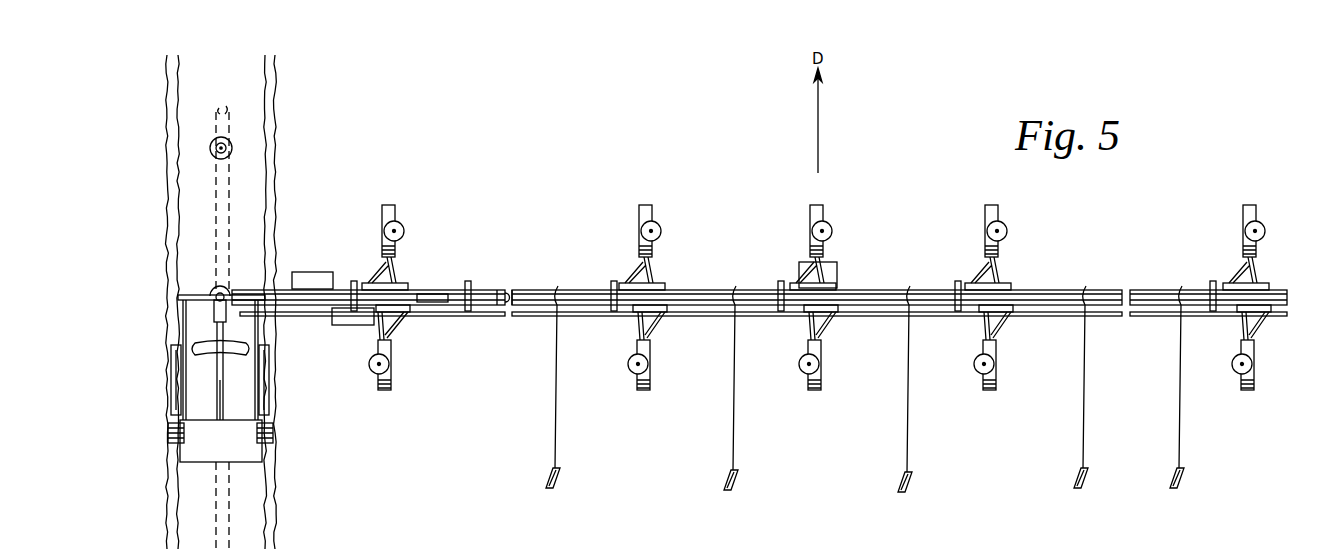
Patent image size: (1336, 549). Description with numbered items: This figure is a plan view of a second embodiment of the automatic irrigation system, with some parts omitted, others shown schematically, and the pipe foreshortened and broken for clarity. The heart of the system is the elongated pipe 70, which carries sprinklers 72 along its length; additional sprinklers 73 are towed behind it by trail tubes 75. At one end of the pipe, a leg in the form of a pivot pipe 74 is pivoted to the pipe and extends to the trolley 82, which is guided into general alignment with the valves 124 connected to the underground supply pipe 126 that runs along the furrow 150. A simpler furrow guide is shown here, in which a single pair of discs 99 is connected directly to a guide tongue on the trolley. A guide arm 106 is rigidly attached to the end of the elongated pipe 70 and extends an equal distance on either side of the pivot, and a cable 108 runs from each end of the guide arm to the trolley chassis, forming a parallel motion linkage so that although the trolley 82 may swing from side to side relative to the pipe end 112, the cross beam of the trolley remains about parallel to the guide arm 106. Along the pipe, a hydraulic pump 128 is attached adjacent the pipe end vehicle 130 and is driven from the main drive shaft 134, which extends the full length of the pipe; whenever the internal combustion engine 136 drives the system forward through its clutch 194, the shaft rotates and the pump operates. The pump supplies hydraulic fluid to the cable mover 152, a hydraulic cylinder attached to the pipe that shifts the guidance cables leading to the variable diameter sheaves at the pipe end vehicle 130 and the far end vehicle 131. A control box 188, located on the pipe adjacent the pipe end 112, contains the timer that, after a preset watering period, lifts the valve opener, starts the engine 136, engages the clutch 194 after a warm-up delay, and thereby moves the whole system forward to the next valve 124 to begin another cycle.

The elongated pipe 70 is at (1180, 290).
The sprinklers 72 is at (558, 290).
The additional sprinklers 73 is at (560, 471).
The pivot pipe 74 is at (218, 376).
The trail tubes 75 is at (557, 387).
The trolley 82 is at (253, 466).
The discs 99 is at (270, 376).
The guide arm 106 is at (212, 291).
The cable 108 is at (177, 323).
The pipe end 112 is at (231, 292).
The valves 124 is at (232, 148).
The underground supply pipe 126 is at (237, 85).
The hydraulic pump 128 is at (356, 326).
The pipe end vehicle 130 is at (394, 322).
The far end vehicle 131 is at (1266, 322).
The main drive shaft 134 is at (720, 318).
The internal combustion engine 136 is at (838, 270).
The furrow 150 is at (178, 187).
The cable mover 152 is at (438, 291).
The control box 188 is at (335, 261).
The clutch 194 is at (846, 291).